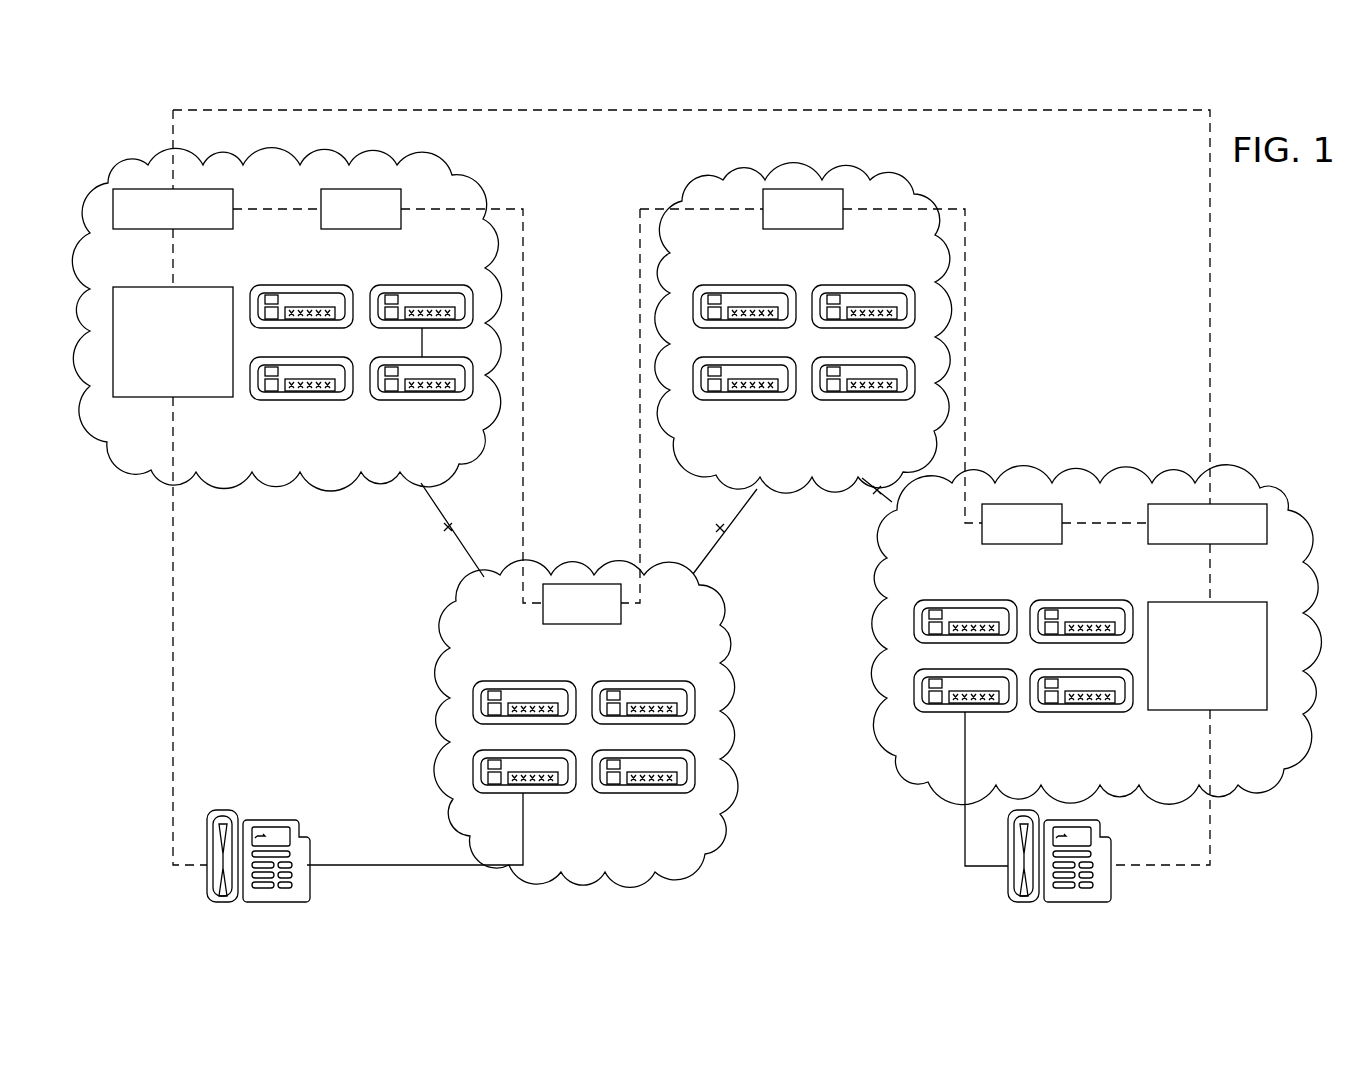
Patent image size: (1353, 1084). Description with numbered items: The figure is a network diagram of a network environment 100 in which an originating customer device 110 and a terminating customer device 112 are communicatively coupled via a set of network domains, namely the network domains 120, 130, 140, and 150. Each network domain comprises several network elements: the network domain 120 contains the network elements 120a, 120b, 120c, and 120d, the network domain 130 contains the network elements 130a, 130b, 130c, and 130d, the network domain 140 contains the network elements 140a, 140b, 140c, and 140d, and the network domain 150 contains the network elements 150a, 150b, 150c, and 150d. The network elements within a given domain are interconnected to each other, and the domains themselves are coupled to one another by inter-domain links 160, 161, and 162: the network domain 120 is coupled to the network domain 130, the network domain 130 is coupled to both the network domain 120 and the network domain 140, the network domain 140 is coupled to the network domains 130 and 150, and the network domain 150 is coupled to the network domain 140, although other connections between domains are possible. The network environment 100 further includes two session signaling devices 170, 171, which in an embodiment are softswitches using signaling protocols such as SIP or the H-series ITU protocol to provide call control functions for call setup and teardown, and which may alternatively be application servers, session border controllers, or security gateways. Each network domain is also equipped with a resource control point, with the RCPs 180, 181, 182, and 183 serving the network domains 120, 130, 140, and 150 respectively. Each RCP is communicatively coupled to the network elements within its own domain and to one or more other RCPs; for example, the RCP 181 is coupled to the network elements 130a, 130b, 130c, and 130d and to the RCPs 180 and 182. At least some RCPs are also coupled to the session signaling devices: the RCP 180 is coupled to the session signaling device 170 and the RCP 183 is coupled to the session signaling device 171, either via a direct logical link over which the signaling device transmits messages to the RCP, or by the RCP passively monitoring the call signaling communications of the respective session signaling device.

The network environment 100 is at (1250, 304).
The originating customer device 110 is at (205, 873).
The terminating customer device 112 is at (1112, 872).
The network domain 120 is at (136, 154).
The network element 120a is at (290, 400).
The network element 120b is at (432, 400).
The network element 120c is at (436, 285).
The network element 120d is at (293, 285).
The network domain 130 is at (428, 773).
The network element 130a is at (545, 795).
The network element 130b is at (645, 795).
The network element 130c is at (657, 681).
The network element 130d is at (512, 681).
The network domain 140 is at (910, 178).
The network element 140a is at (735, 400).
The network element 140b is at (866, 400).
The network element 140c is at (876, 285).
The network element 140d is at (733, 285).
The network domain 150 is at (1246, 786).
The network element 150a is at (988, 714).
The network element 150b is at (1090, 714).
The network element 150c is at (1110, 600).
The network element 150d is at (952, 600).
The inter-domain link 160 is at (460, 552).
The inter-domain link 161 is at (711, 556).
The inter-domain link 162 is at (891, 494).
The session signaling device 170 is at (142, 286).
The session signaling device 171 is at (1236, 601).
The resource control point 180 is at (368, 230).
The resource control point 181 is at (585, 625).
The resource control point 182 is at (805, 230).
The resource control point 183 is at (1020, 545).